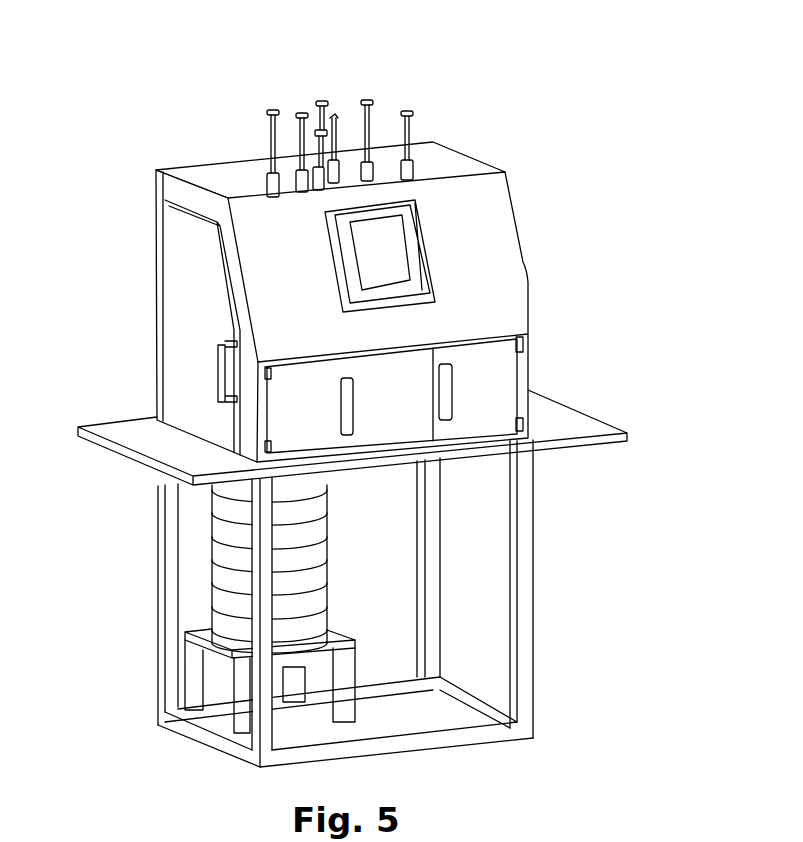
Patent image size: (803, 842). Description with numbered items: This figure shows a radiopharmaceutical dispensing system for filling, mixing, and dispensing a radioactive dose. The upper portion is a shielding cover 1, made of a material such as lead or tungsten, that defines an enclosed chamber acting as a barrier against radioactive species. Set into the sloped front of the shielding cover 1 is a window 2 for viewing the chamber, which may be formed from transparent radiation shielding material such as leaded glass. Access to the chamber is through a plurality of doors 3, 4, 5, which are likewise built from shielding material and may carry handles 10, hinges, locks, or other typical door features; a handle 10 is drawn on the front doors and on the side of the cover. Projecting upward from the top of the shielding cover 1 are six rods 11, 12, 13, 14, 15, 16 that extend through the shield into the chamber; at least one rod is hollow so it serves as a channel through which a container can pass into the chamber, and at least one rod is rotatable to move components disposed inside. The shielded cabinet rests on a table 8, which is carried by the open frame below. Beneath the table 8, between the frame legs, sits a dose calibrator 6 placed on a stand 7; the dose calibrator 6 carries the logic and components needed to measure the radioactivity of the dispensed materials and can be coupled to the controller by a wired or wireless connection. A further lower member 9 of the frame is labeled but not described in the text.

The shielding cover 1 is at (493, 219).
The window 2 is at (438, 267).
The door 3 is at (433, 347).
The door 4 is at (517, 387).
The door 5 is at (206, 300).
The dose calibrator 6 is at (315, 547).
The stand 7 is at (353, 668).
The table 8 is at (553, 503).
The crossbar 9 is at (257, 703).
The handle 10 is at (353, 405).
The rod 11 is at (265, 97).
The rod 12 is at (303, 97).
The rod 13 is at (320, 100).
The rod 14 is at (337, 100).
The rod 15 is at (377, 97).
The rod 16 is at (417, 118).